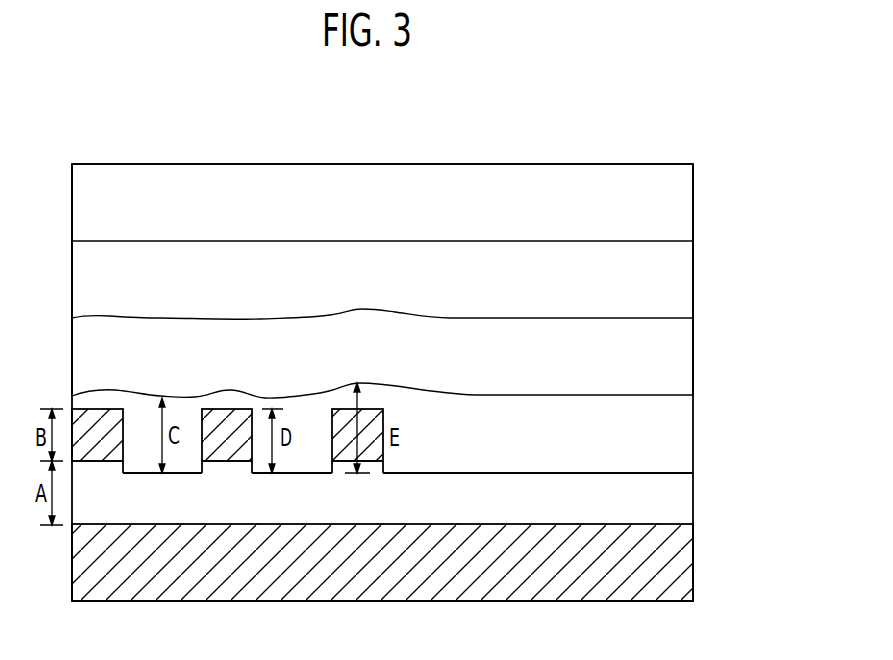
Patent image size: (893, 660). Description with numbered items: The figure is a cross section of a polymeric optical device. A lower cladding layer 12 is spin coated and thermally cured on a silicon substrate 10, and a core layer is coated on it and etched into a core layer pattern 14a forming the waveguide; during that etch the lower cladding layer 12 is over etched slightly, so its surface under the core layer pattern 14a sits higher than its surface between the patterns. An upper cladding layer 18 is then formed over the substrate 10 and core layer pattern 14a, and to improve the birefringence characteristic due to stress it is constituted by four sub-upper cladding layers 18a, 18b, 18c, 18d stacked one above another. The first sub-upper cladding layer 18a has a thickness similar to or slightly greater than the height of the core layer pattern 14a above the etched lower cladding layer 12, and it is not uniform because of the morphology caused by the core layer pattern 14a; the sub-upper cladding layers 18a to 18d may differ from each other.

The silicon substrate 10 is at (685, 565).
The lower cladding layer 12 is at (685, 497).
The core layer pattern 14a is at (233, 452).
The upper cladding layer 18 is at (772, 182).
The first sub-upper cladding layer 18a is at (697, 395).
The second sub-upper cladding layer 18b is at (697, 318).
The third sub-upper cladding layer 18c is at (697, 241).
The fourth sub-upper cladding layer 18d is at (697, 164).